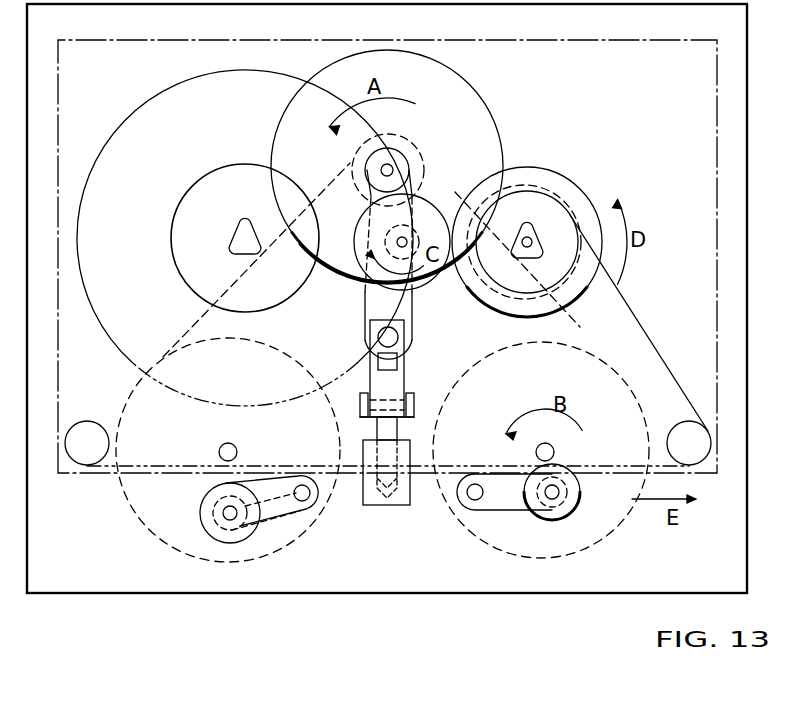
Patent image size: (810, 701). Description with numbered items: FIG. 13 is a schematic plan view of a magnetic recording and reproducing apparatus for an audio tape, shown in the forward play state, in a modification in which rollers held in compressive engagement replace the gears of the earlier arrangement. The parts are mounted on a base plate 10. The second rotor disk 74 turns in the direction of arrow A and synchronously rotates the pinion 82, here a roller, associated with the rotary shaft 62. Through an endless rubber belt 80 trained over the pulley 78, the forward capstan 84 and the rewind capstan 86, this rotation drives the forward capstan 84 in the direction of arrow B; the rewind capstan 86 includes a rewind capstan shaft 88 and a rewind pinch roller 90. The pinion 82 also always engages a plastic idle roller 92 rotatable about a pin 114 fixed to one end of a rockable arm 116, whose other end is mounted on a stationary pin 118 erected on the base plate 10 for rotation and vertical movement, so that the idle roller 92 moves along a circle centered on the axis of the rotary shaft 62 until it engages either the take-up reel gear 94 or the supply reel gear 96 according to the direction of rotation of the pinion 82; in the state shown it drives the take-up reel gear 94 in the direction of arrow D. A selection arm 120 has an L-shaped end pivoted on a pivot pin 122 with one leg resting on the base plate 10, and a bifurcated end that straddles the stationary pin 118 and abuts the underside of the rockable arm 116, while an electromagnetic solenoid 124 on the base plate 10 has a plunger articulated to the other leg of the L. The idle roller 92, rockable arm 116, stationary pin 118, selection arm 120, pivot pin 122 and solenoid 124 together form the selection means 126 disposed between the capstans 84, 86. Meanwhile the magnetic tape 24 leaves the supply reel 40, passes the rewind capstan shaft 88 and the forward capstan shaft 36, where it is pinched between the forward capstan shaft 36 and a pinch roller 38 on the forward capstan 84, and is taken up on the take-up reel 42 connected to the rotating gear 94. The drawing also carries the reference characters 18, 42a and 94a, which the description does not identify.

The base plate 10 is at (747, 130).
The cover plate 18 is at (717, 203).
The magnetic tape 24 is at (643, 327).
The forward capstan shaft 36 is at (554, 452).
The pinch roller 38 is at (566, 517).
The supply reel 40 is at (142, 117).
The take-up reel 42 is at (519, 192).
The pulley hub 42a is at (543, 230).
The rotary shaft 62 is at (383, 174).
The second rotor disk 74 is at (342, 58).
The pulley 78 is at (342, 167).
The endless rubber belt 80 is at (580, 327).
The pinion 82 is at (404, 157).
The forward capstan 84 is at (540, 558).
The rewind capstan 86 is at (228, 562).
The rewind capstan shaft 88 is at (237, 452).
The rewind pinch roller 90 is at (200, 508).
The idle roller 92 is at (438, 210).
The take-up reel gear 94 is at (591, 198).
The hub 94a is at (521, 256).
The supply reel gear 96 is at (198, 197).
The pin 114 is at (395, 241).
The rockable arm 116 is at (413, 306).
The stationary pin 118 is at (392, 337).
The selection arm 120 is at (395, 383).
The pivot pin 122 is at (408, 403).
The electromagnetic solenoid 124 is at (363, 502).
The selection means 126 is at (374, 299).